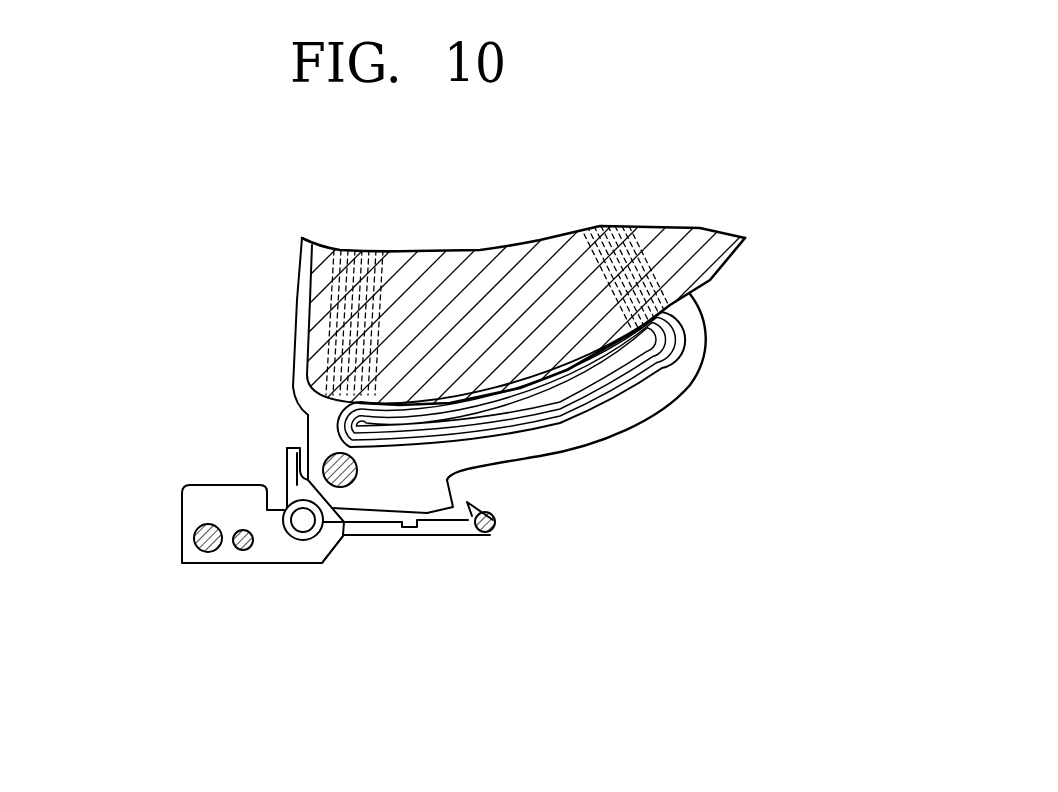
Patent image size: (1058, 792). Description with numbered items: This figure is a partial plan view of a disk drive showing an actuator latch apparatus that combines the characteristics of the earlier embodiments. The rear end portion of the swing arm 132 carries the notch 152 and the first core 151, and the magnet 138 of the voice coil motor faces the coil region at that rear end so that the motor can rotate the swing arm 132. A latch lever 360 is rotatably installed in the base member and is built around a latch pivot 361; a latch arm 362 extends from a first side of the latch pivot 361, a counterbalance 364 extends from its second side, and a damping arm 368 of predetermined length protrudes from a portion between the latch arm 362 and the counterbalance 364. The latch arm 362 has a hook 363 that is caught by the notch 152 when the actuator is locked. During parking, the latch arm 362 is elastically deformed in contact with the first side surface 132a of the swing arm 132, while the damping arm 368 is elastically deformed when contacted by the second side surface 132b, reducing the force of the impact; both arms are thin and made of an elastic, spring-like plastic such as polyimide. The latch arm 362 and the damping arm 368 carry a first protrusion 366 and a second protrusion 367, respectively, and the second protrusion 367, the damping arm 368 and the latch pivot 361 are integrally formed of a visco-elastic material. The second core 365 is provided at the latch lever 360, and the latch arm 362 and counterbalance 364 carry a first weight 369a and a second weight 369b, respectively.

The magnet 138 is at (477, 265).
The notch 152 is at (437, 500).
The first core 151 is at (345, 452).
The second side surface 132b is at (305, 432).
The second protrusion 367 is at (292, 457).
The damping arm 368 is at (284, 472).
The second weight 369b is at (193, 540).
The second core 365 is at (235, 552).
The counterbalance 364 is at (258, 562).
The latch pivot 361 is at (302, 542).
The first side surface 132a is at (344, 540).
The latch lever 360 is at (350, 543).
The first protrusion 366 is at (408, 527).
The latch arm 362 is at (445, 537).
The first weight 369a is at (488, 534).
The hook 363 is at (488, 504).
The swing arm 132 is at (643, 395).